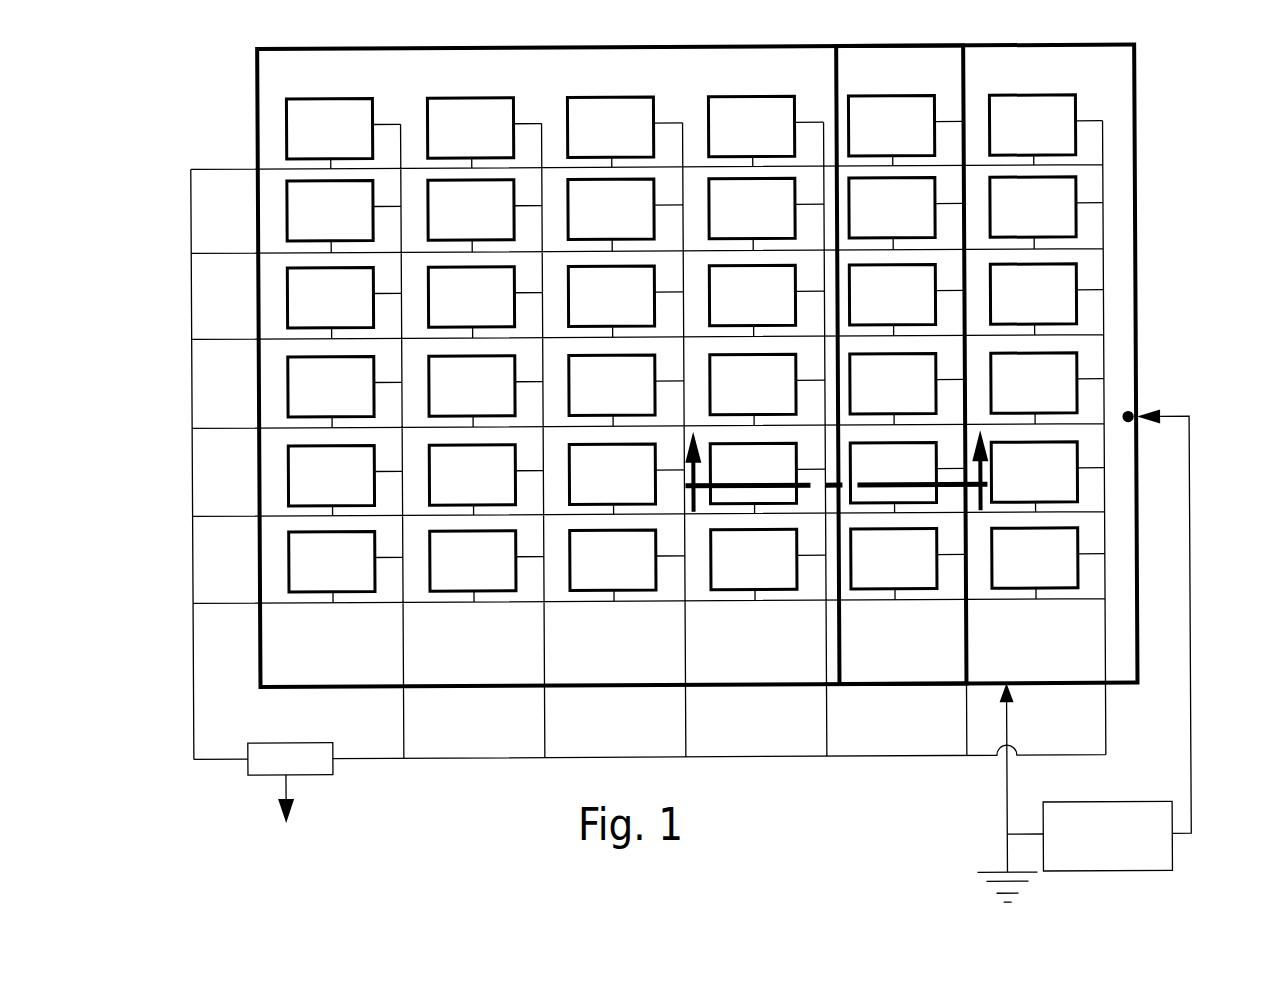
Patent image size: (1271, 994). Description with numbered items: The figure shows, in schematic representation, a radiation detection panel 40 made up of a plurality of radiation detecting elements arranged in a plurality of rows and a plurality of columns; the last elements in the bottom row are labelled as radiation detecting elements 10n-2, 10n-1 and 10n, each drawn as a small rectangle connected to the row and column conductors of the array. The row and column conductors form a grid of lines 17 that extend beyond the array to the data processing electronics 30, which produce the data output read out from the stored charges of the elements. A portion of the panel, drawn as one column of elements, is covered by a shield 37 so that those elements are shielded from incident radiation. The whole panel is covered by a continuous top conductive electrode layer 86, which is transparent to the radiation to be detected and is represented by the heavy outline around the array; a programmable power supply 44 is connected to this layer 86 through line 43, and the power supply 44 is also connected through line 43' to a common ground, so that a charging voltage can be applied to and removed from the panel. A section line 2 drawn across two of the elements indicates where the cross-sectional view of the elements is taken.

The radiation detection panel 40 is at (216, 70).
The shield 37 is at (943, 62).
The section line 2 is at (838, 489).
The top conductive electrode layer 86 is at (1131, 412).
The line 43 is at (1197, 621).
The line 43' is at (991, 793).
The programmable power supply 44 is at (1107, 836).
The data processing electronics 30 is at (290, 783).
The row/column bus lines 17 is at (192, 711).
The radiation detecting element 10n-2 is at (754, 559).
The radiation detecting element 10n-1 is at (894, 559).
The radiation detecting element 10n is at (1035, 558).